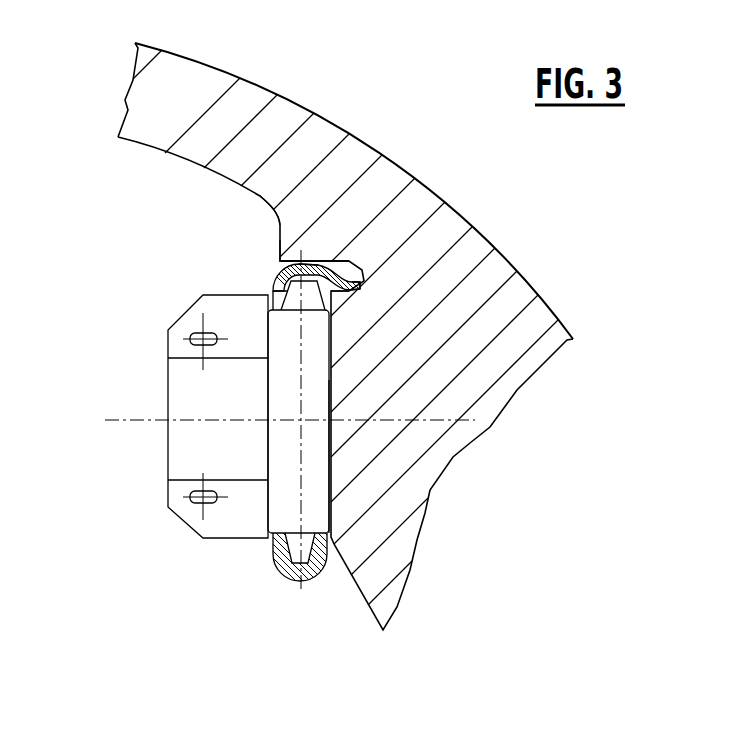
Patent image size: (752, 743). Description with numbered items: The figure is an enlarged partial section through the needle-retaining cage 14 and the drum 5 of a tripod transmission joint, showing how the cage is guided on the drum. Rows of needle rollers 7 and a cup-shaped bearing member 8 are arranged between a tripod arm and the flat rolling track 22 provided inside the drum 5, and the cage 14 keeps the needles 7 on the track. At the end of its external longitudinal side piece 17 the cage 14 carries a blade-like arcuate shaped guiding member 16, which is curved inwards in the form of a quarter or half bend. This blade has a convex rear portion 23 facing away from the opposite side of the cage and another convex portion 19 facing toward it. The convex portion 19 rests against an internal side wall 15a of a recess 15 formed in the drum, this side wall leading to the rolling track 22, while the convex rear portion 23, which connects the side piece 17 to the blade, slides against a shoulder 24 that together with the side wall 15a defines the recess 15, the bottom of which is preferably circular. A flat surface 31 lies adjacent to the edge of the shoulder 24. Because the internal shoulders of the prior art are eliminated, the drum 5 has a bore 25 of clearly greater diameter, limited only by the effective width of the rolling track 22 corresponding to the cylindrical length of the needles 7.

The drum 5 is at (213, 65).
The needle rollers 7 is at (285, 388).
The bearings or cup-shaped members 8 is at (187, 458).
The cage 14 is at (272, 572).
The recess 15 is at (346, 271).
The internal side wall 15a is at (336, 258).
The blade-like arcuate shaped guiding member 16 is at (366, 289).
The external longitudinal side piece 17 is at (307, 259).
The convex portion 19 is at (341, 304).
The rolling track 22 is at (323, 478).
The convex rear portion 23 is at (324, 250).
The shoulder 24 is at (281, 261).
The bore 25 is at (357, 587).
The flat surface 31 is at (278, 242).